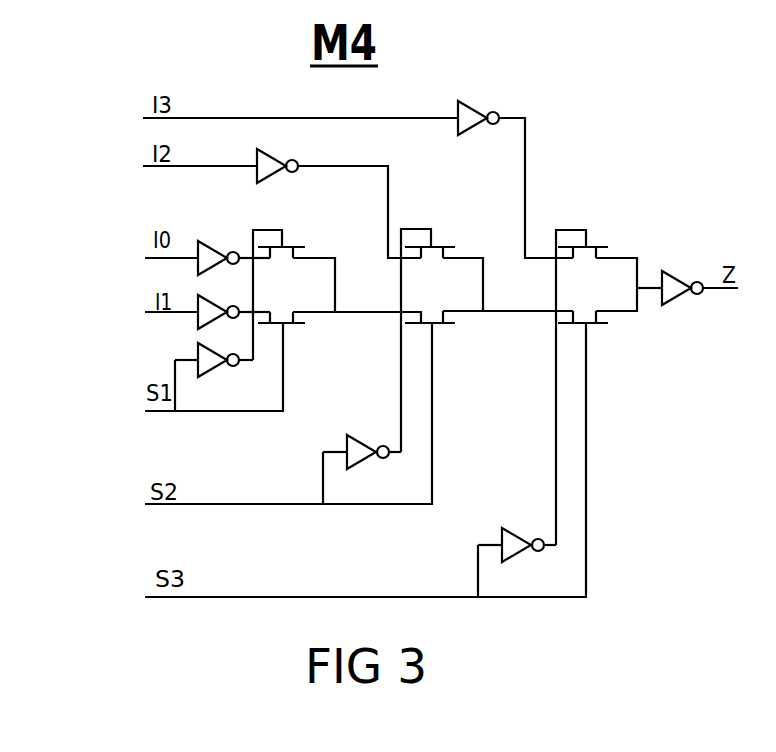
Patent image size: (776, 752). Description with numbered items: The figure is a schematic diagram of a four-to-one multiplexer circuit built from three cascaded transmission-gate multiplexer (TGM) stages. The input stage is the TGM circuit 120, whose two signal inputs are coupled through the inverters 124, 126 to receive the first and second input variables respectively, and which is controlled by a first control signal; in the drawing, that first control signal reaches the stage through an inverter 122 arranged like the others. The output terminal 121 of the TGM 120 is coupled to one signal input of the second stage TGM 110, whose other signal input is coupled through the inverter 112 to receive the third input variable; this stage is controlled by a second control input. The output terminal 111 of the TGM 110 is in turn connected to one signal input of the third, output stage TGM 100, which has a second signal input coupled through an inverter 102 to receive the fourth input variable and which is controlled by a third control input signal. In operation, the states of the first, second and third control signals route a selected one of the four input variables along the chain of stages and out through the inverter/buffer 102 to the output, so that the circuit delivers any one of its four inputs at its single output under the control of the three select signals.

The third (output) stage TGM 100 is at (610, 280).
The inverter 102 is at (460, 115).
The second stage TGM 110 is at (443, 283).
The output terminal of TGM 110 111 is at (543, 316).
The inverter 112 is at (282, 163).
The input stage TGM circuit 120 is at (297, 283).
The output terminal of TGM 120 121 is at (380, 316).
The inverter on select S1 122 is at (195, 352).
The inverter 124 is at (192, 245).
The inverter 126 is at (195, 295).